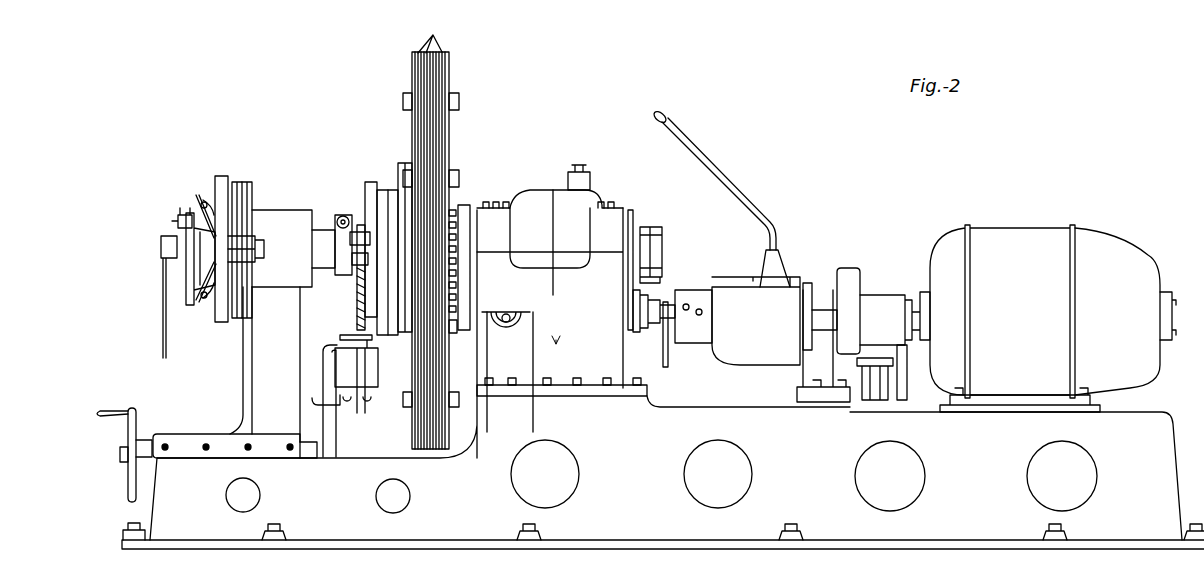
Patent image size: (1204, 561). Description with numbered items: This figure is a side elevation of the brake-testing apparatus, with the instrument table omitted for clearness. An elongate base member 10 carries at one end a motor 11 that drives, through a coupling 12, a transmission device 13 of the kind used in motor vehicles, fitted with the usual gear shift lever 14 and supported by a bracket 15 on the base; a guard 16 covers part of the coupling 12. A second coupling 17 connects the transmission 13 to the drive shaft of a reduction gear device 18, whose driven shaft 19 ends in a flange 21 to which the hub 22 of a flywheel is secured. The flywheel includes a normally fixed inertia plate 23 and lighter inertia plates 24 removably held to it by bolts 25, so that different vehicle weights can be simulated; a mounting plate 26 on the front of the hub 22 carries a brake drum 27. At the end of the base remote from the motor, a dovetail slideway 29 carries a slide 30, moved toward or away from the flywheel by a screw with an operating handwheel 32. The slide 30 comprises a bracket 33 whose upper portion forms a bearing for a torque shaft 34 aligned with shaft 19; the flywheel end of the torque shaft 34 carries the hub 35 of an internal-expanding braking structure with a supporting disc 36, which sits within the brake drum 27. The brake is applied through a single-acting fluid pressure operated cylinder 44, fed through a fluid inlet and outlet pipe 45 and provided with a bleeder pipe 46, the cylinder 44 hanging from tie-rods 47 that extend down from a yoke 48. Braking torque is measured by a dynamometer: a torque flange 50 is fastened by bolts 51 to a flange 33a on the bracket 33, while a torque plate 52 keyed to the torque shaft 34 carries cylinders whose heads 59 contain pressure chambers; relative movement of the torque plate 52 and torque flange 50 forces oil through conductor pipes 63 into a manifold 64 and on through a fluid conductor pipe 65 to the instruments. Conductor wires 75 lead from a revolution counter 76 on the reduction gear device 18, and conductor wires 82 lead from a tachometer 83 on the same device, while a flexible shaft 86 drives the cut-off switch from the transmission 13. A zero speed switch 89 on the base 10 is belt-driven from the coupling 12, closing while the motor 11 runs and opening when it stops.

The base member 10 is at (663, 379).
The motor 11 is at (1030, 237).
The coupling 12 is at (883, 300).
The transmission device 13 is at (780, 292).
The gear shift lever 14 is at (736, 188).
The bracket 15 is at (810, 378).
The guard 16 is at (846, 272).
The coupling 17 is at (655, 294).
The reduction gear device 18 is at (526, 208).
The driven shaft 19 is at (663, 250).
The flange 21 is at (463, 210).
The hub 22 is at (393, 188).
The fixed inertia plate 23 is at (446, 78).
The inertia plates 24 is at (431, 33).
The bolts 25 is at (459, 101).
The mounting plate 26 is at (395, 170).
The brake drum 27 is at (385, 193).
The dovetail slideway 29 is at (312, 460).
The slide 30 is at (200, 432).
The handwheel 32 is at (127, 480).
The bracket 33 is at (258, 353).
The flange 33a is at (248, 185).
The torque shaft 34 is at (318, 243).
The hub 35 is at (330, 232).
The supporting disc 36 is at (370, 204).
The fluid pressure operated cylinder 44 is at (373, 365).
The fluid inlet and outlet pipe 45 is at (334, 428).
The bleeder pipe 46 is at (325, 404).
The tie-rods 47 is at (357, 315).
The yoke 48 is at (347, 266).
The torque flange 50 is at (236, 183).
The bolts 51 is at (246, 250).
The torque plate 52 is at (220, 177).
The heads 59 is at (214, 190).
The conductor pipes 63 is at (198, 208).
The manifold 64 is at (180, 226).
The fluid conductor pipe 65 is at (163, 330).
The conductor wires 75 is at (553, 291).
The revolution counter 76 is at (590, 182).
The conductor wires 82 is at (533, 422).
The tachometer 83 is at (505, 332).
The flexible shaft 86 is at (670, 368).
The zero speed switch 89 is at (873, 405).